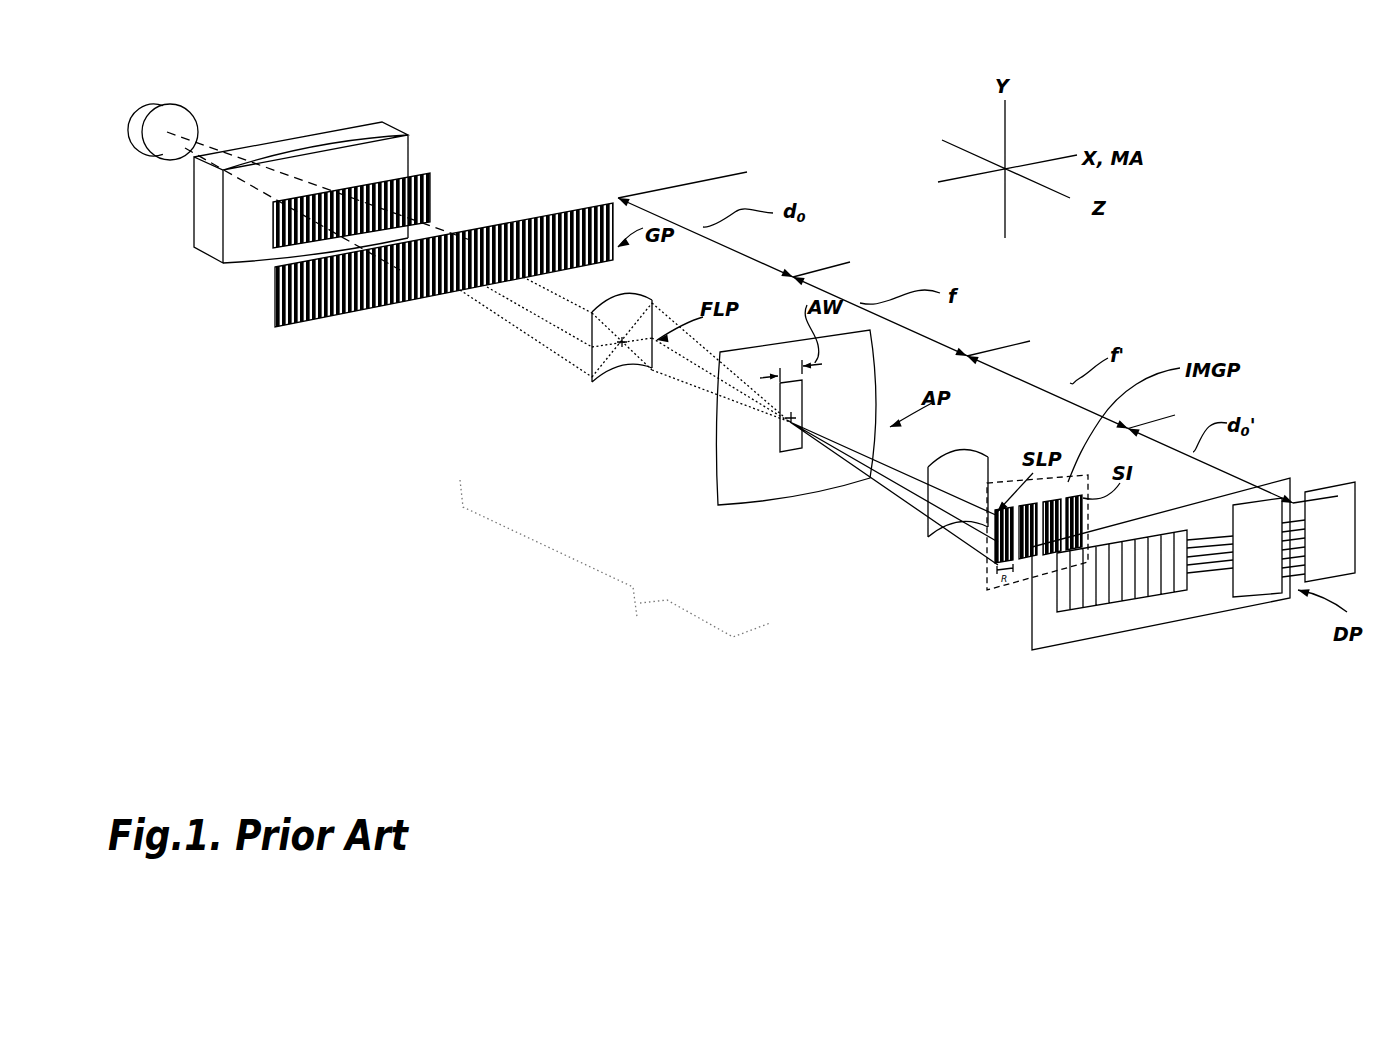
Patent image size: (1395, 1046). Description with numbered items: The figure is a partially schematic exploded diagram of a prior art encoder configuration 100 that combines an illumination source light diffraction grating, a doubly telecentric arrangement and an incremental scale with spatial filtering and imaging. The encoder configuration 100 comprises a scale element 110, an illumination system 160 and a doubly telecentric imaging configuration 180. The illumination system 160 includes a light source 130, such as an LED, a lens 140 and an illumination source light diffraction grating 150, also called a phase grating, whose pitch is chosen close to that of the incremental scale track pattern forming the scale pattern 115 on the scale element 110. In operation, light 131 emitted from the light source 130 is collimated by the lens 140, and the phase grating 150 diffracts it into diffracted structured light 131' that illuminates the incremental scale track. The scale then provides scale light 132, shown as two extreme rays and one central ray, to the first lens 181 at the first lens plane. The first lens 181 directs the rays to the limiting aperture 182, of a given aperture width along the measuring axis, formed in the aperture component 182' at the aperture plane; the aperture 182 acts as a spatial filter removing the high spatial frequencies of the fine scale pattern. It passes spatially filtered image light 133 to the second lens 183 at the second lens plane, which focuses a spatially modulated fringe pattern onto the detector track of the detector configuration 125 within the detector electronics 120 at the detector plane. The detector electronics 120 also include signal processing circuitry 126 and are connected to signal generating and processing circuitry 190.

The encoder configuration 100 is at (1222, 145).
The scale element 110 is at (620, 182).
The scale pattern 115 is at (275, 328).
The detector electronics 120 is at (1077, 643).
The detector configuration 125 is at (1030, 613).
The signal processing circuitry 126 is at (1253, 595).
The light source 130 is at (181, 162).
The light 131 is at (318, 182).
The diffracted structured light 131' is at (511, 195).
The scale light 132 is at (575, 342).
The spatially filtered image light 133 is at (887, 493).
The lens 140 is at (213, 207).
The illumination source light diffraction grating 150 is at (217, 234).
The illumination system 160 is at (125, 102).
The doubly telecentric imaging configuration 180 is at (615, 561).
The first lens 181 is at (628, 384).
The aperture 182 is at (743, 448).
The aperture component 182' is at (725, 433).
The second lens 183 is at (920, 535).
The signal generating and processing circuitry 190 is at (1317, 483).